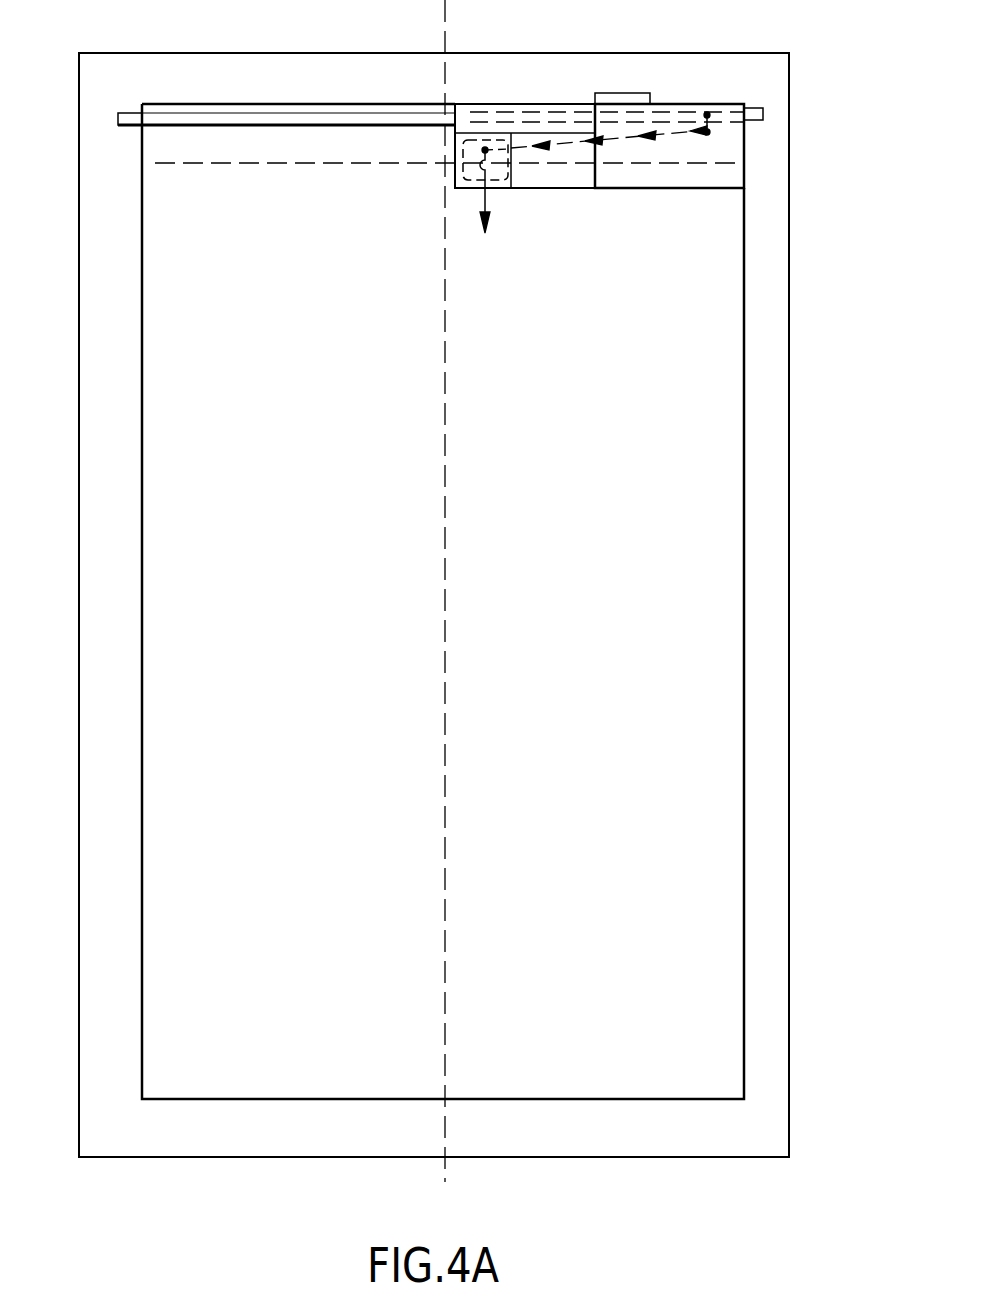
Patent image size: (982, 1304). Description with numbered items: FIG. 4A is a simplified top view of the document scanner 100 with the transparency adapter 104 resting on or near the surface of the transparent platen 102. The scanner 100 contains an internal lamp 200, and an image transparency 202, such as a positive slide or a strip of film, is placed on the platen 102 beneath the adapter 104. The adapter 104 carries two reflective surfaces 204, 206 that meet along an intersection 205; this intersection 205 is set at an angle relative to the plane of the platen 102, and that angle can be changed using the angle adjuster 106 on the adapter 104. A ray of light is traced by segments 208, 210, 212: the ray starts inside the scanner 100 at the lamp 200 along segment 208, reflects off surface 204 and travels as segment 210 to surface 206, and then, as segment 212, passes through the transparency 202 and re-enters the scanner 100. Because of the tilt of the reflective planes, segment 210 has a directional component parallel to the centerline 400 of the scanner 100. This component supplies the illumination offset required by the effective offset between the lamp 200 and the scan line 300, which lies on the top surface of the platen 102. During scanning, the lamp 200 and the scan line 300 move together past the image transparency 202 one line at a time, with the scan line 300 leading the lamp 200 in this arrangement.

The scanner 100 is at (789, 565).
The transparent platen 102 is at (252, 748).
The adapter 104 is at (605, 190).
The angle adjuster 106 is at (615, 93).
The internal lamp 200 is at (203, 127).
The image transparency 202 is at (512, 165).
The reflective surface 204 is at (695, 78).
The intersection of the reflective planes 205 is at (592, 182).
The reflective surface 206 is at (510, 104).
The light ray segment 208 is at (707, 132).
The light ray segment 210 is at (653, 138).
The light ray segment 212 is at (470, 200).
The scan line 300 is at (293, 163).
The centerline 400 is at (445, 596).